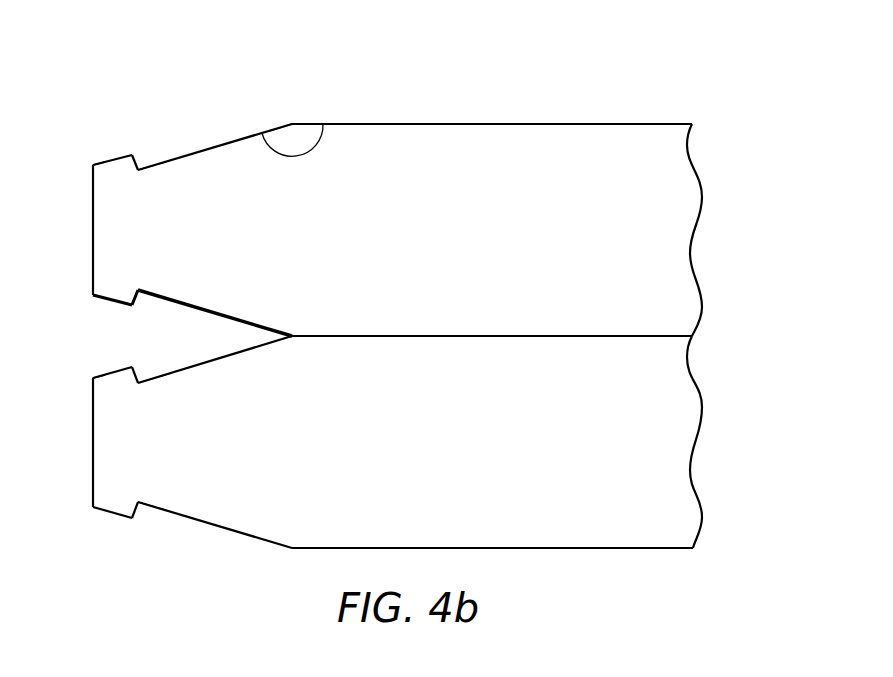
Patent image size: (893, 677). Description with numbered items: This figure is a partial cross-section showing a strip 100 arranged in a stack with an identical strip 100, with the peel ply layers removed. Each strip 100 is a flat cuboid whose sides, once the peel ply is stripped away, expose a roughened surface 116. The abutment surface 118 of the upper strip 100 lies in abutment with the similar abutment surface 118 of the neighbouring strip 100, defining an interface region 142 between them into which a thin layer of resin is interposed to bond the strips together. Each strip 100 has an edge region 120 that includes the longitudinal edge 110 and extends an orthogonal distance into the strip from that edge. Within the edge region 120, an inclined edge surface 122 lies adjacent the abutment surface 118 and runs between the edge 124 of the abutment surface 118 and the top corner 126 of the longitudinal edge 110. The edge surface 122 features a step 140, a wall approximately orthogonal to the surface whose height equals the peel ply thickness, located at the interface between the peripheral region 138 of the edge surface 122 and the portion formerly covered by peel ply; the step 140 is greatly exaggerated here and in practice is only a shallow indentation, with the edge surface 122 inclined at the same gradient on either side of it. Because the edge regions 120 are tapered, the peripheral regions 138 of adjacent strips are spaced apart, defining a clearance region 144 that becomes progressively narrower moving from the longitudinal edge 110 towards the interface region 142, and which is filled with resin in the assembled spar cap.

The strip 100 is at (724, 152).
The longitudinal edge 110 is at (93, 232).
The roughened surface 116 is at (162, 167).
The abutment surface 118 is at (575, 123).
The edge region 120 is at (131, 100).
The edge surface 122 is at (218, 145).
The edge of the abutment surface 124 is at (292, 122).
The top corner 126 is at (92, 165).
The peripheral region 138 is at (112, 160).
The step 140 is at (117, 167).
The interface region 142 is at (502, 336).
The clearance region 144 is at (165, 338).